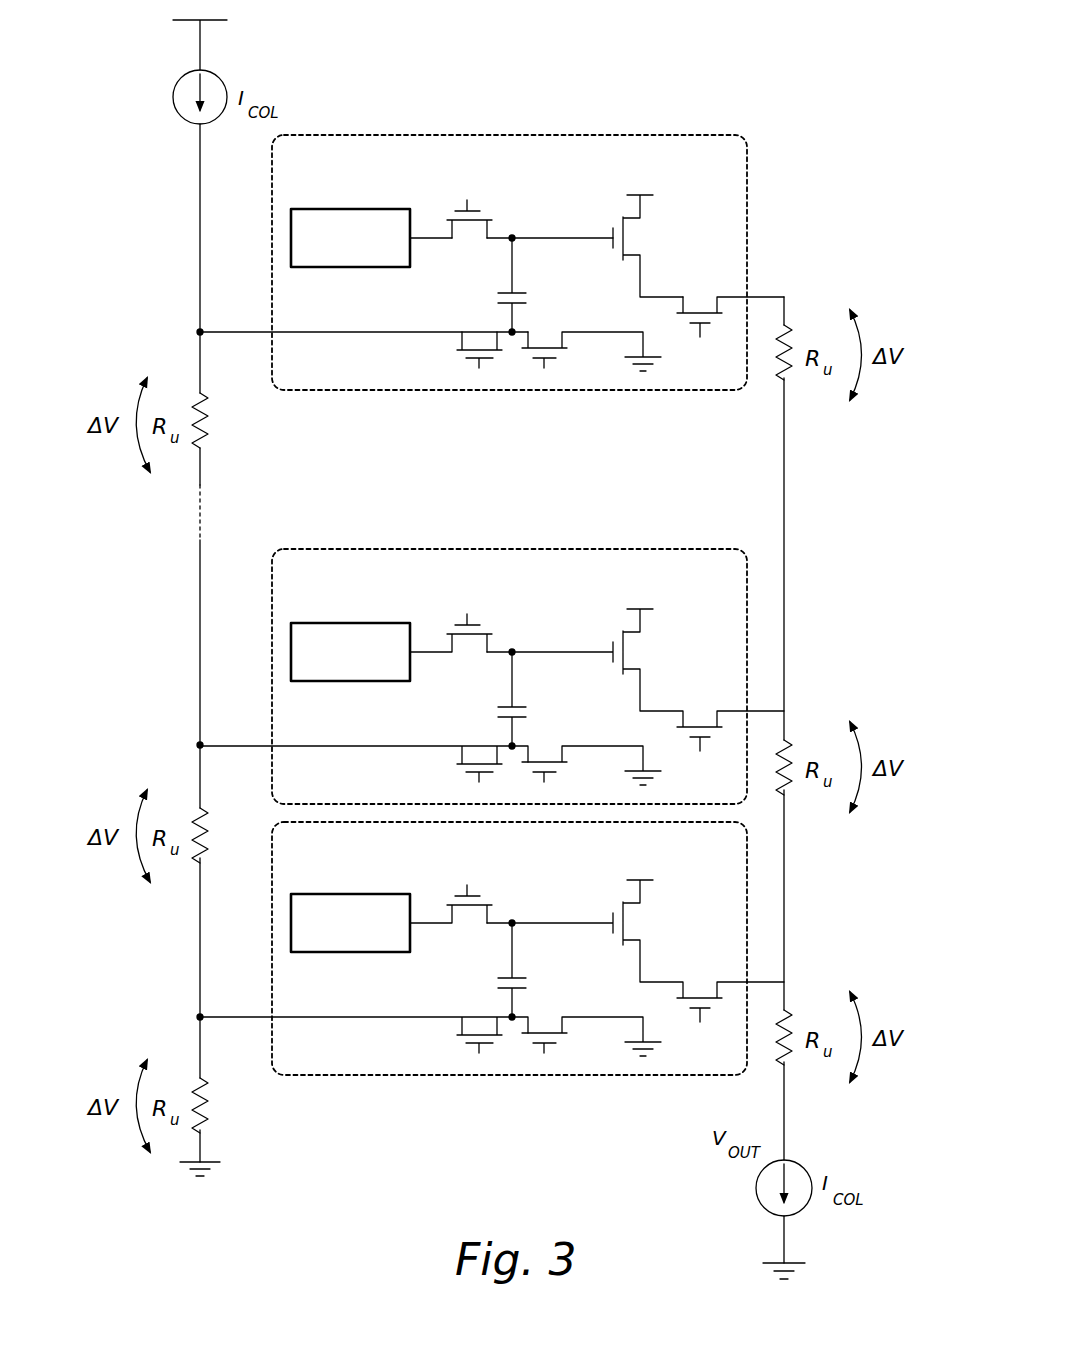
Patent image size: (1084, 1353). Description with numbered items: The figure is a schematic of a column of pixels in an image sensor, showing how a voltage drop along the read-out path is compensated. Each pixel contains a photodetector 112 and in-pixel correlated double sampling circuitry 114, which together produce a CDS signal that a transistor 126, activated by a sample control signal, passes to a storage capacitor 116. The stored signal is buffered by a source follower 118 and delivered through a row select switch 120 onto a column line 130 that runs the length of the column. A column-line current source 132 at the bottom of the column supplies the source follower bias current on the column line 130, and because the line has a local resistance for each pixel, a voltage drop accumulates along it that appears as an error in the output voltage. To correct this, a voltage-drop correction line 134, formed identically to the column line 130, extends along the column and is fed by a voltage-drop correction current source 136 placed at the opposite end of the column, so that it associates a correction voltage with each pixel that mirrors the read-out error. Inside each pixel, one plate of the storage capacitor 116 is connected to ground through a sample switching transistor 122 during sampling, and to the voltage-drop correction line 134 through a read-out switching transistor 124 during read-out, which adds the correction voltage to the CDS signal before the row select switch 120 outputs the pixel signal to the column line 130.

The photodetector 112 is at (369, 178).
The in-pixel correlated double sampling (CDS) circuitry 114 is at (343, 209).
The storage capacitor 116 is at (527, 293).
The source follower 118 is at (625, 241).
The row select switch 120 is at (698, 313).
The sample switching transistor 122 is at (545, 368).
The read-out switching transistor 124 is at (482, 348).
The transistor 126 is at (491, 220).
The column line 130 is at (786, 311).
The column-line current source 132 is at (757, 1197).
The voltage-drop correction line 134 is at (198, 207).
The voltage-drop correction current source 136 is at (172, 104).